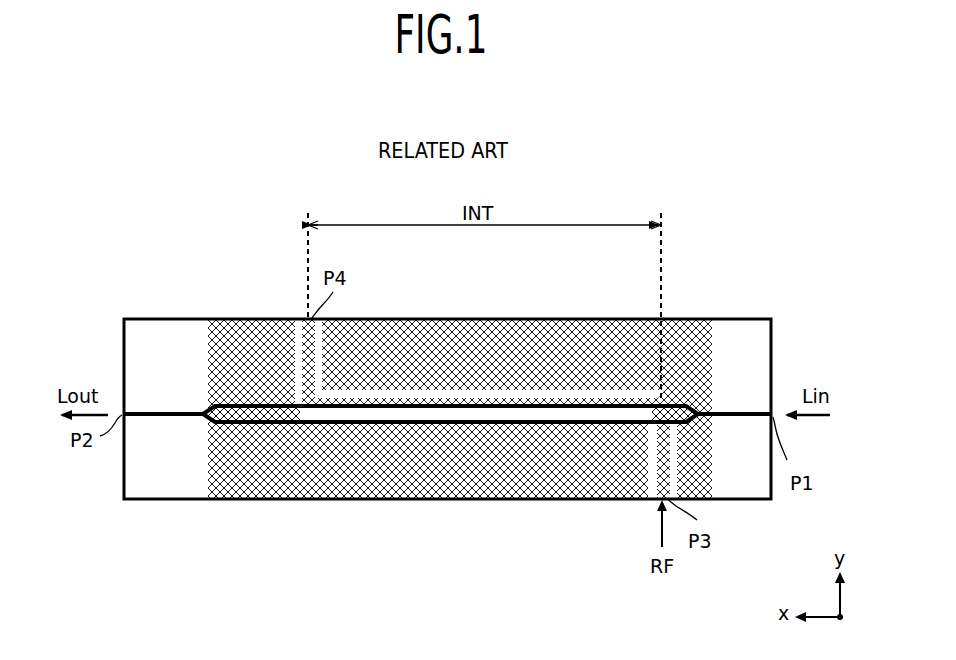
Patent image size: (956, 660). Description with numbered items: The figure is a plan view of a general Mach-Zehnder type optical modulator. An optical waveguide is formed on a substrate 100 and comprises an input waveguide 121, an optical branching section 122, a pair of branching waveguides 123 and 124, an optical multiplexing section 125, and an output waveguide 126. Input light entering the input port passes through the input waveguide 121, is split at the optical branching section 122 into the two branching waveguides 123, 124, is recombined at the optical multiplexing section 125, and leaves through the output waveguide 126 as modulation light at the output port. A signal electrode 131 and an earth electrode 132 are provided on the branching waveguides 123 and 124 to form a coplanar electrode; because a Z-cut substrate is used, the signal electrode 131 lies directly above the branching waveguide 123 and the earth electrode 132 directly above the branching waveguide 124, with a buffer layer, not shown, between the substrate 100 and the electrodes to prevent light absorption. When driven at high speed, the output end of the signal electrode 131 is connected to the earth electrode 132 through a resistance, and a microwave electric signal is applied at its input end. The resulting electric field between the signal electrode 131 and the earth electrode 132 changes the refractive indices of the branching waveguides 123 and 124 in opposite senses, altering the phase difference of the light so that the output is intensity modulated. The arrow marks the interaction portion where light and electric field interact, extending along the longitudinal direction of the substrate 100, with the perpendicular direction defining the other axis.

The substrate 100 is at (753, 500).
The input waveguide 121 is at (735, 413).
The optical branching section 122 is at (690, 412).
The branching waveguide 123 is at (593, 380).
The branching waveguide 124 is at (527, 427).
The optical multiplexing section 125 is at (210, 405).
The output waveguide 126 is at (150, 410).
The signal electrode 131 is at (657, 463).
The earth electrode 132 is at (431, 345).